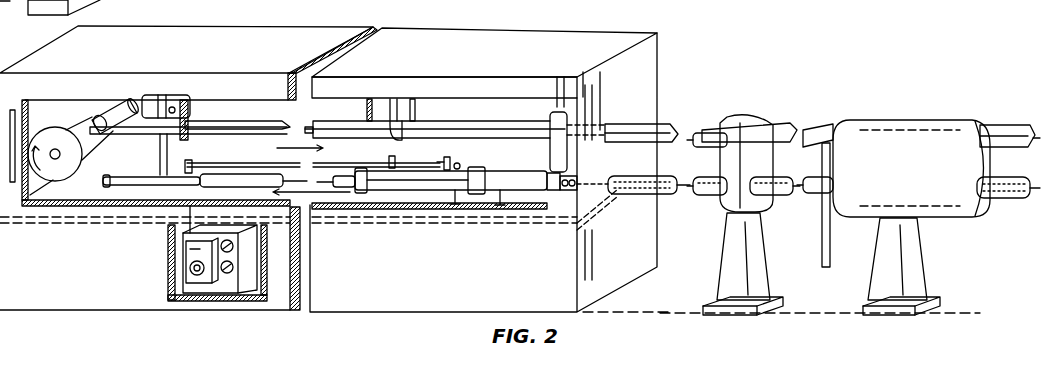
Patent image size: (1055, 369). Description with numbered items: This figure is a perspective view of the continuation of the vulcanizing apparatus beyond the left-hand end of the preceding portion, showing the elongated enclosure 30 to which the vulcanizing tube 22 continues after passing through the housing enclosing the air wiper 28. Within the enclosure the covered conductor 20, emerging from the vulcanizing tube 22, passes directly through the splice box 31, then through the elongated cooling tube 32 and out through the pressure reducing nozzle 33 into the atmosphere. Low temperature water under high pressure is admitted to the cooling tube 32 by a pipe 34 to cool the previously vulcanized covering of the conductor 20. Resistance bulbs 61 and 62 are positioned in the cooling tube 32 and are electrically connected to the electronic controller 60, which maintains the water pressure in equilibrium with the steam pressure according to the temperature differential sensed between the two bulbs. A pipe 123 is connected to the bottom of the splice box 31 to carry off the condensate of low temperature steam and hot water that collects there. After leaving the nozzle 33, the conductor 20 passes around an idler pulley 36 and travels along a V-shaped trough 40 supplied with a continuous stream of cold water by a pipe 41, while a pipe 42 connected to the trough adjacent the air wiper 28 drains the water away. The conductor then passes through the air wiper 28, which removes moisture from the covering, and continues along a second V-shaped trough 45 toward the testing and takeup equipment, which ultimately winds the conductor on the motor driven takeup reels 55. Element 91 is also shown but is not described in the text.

The covered conductor 20 is at (83, 128).
The vulcanizing tube 22 is at (1016, 211).
The air wiper 28 is at (945, 215).
The elongated enclosure 30 is at (545, 33).
The splice box 31 is at (530, 192).
The cooling tube 32 is at (447, 165).
The pressure reducing nozzle 33 is at (153, 192).
The pipe 34 is at (457, 193).
The idler pulley 36 is at (53, 181).
The V-shaped trough 40 is at (242, 125).
The pipe 41 is at (172, 157).
The pipe 42 is at (823, 253).
The second V-shaped trough 45 is at (1008, 130).
The takeup reel 55 is at (190, 0).
The electronic controller 60 is at (203, 290).
The resistance bulb 61 is at (458, 166).
The resistance bulb 62 is at (392, 162).
The cylinder 91 is at (267, 180).
The pipe 123 is at (500, 193).